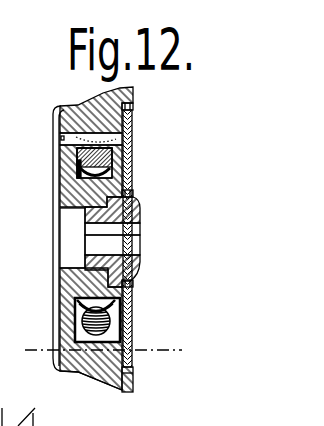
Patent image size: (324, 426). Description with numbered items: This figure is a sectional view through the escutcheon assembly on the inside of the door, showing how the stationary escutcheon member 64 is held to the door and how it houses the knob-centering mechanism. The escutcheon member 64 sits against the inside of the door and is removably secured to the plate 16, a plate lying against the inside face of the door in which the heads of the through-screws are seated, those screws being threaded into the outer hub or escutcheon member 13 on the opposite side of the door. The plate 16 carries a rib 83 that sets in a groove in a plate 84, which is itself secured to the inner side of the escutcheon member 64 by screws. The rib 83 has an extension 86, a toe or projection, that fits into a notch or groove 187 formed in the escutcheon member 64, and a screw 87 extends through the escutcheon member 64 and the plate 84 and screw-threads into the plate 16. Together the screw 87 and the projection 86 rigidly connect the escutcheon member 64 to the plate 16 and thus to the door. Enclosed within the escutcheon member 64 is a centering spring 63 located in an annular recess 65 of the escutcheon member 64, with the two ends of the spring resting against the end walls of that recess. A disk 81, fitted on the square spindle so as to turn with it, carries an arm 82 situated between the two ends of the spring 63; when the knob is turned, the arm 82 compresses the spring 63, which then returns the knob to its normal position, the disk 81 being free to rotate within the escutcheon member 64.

The outer hub or escutcheon member 13 is at (104, 346).
The plate 16 is at (133, 165).
The centering spring 63 is at (84, 325).
The stationary escutcheon member 64 is at (87, 105).
The annular recess 65 is at (78, 305).
The disk 81 is at (120, 216).
The arm 82 is at (77, 162).
The rib 83 is at (132, 328).
The plate 84 is at (126, 186).
The extension 86 is at (123, 391).
The screw 87 is at (78, 140).
The notch or groove 187 is at (135, 102).